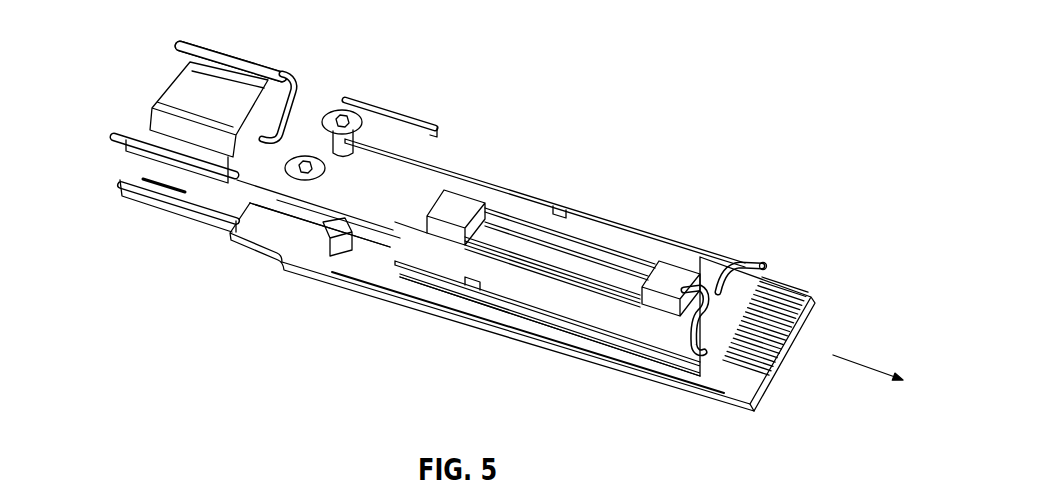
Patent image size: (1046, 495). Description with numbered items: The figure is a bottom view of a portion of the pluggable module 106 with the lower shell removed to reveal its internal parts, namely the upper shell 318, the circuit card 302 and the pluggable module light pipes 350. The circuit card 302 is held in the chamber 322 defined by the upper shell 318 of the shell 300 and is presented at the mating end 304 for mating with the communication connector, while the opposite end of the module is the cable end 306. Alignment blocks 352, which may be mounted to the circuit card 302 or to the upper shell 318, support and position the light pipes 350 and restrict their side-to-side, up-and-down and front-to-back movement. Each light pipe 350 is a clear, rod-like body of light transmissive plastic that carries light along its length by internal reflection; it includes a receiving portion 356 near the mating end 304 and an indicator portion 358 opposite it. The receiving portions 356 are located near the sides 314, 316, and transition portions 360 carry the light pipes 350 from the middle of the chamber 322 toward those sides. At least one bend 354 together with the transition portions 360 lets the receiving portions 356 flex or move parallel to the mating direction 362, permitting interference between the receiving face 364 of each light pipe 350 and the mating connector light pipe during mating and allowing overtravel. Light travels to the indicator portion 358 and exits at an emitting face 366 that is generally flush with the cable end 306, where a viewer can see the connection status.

The pluggable module 106 is at (450, 65).
The shell 300 is at (337, 298).
The circuit card 302 is at (638, 247).
The mating end 304 is at (779, 389).
The cable end 306 is at (137, 108).
The side 314 is at (608, 215).
The side 316 is at (583, 338).
The upper shell 318 is at (420, 290).
The chamber 322 is at (562, 206).
The pluggable module light pipe 350 is at (566, 235).
The alignment block 352 is at (467, 193).
The bend 354 is at (291, 105).
The receiving portion 356 is at (753, 263).
The indicator portion 358 is at (222, 48).
The transition portion 360 is at (318, 90).
The mating direction 362 is at (870, 363).
The receiving face 364 is at (768, 265).
The emitting face 366 is at (178, 42).